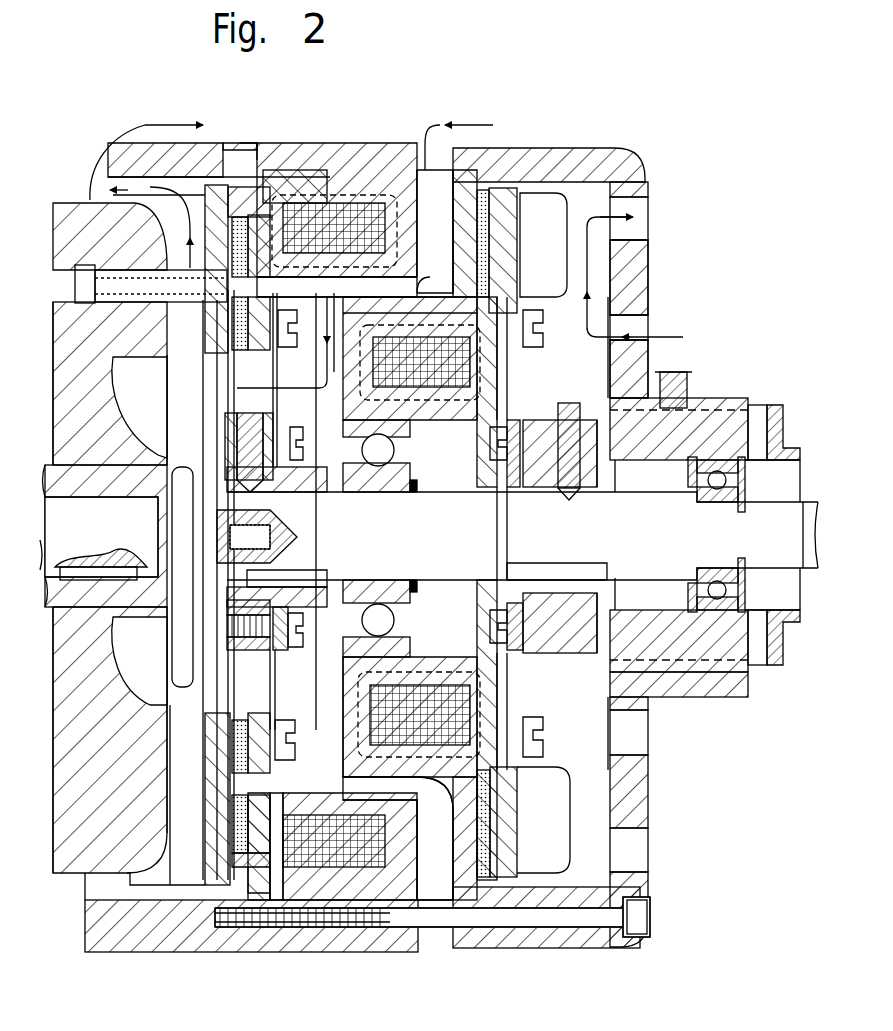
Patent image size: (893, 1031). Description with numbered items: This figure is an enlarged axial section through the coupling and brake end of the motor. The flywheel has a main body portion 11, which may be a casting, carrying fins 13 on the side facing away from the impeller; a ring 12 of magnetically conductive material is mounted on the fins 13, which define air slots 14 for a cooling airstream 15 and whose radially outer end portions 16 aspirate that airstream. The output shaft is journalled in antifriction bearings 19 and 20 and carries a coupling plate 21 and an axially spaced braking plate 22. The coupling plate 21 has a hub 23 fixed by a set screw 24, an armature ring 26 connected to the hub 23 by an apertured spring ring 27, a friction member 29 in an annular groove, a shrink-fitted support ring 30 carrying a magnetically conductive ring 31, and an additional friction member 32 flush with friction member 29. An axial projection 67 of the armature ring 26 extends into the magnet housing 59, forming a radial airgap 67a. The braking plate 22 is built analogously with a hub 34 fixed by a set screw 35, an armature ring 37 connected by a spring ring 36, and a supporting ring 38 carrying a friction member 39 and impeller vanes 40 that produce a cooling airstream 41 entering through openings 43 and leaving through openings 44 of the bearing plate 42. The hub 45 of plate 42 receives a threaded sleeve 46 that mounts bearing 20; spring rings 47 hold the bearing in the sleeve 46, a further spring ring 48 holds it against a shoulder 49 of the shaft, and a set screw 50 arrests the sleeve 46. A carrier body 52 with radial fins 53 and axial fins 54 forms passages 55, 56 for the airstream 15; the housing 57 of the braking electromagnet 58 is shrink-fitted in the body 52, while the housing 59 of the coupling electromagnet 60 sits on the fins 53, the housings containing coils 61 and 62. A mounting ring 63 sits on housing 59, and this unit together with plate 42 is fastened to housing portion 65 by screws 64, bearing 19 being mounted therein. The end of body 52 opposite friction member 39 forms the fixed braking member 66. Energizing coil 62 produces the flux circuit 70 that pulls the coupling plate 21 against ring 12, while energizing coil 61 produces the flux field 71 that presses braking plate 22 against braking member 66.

The main body portion 11 is at (77, 220).
The ring 12 is at (200, 822).
The fins 13 is at (165, 885).
The air slots 14 is at (180, 752).
The cooling airstream 15 is at (484, 125).
The radially outer end portions 16 is at (183, 885).
The antifriction bearing 19 is at (375, 480).
The antifriction bearing 20 is at (716, 495).
The coupling plate 21 is at (312, 610).
The braking plate 22 is at (525, 797).
The hub 23 is at (310, 478).
The set screw 24 is at (245, 448).
The armature ring 26 is at (240, 782).
The spring ring 27 is at (272, 676).
The friction member 29 is at (232, 730).
The support ring 30 is at (255, 806).
The ring 31 is at (260, 875).
The additional friction member 32 is at (235, 845).
The hub 34 is at (560, 650).
The set screw 35 is at (568, 415).
The spring ring 36 is at (520, 692).
The armature ring 37 is at (545, 748).
The supporting ring 38 is at (510, 826).
The friction member 39 is at (478, 862).
The impeller vanes 40 is at (555, 292).
The cooling airstream 41 is at (652, 215).
The bearing plate 42 is at (568, 948).
The openings 43 is at (642, 320).
The openings 44 is at (642, 230).
The hub 45 is at (678, 697).
The threaded sleeve 46 is at (762, 660).
The spring rings 47 is at (686, 472).
The spring ring 48 is at (745, 568).
The shoulder 49 is at (690, 578).
The set screw 50 is at (676, 380).
The carrier body 52 is at (460, 832).
The radial fins 53 is at (428, 890).
The axial fins 54 is at (410, 782).
The passage 55 is at (427, 180).
The passage 56 is at (340, 275).
The housing 57 is at (345, 672).
The electromagnet 58 is at (450, 652).
The housing 59 is at (345, 930).
The electromagnet 60 is at (357, 160).
The coil 61 is at (385, 703).
The coil 62 is at (318, 170).
The mounting ring 63 is at (268, 160).
The screws 64 is at (651, 910).
The housing portion 65 is at (205, 950).
The braking member 66 is at (477, 162).
The axial projection 67 is at (297, 325).
The radial airgap 67a is at (322, 418).
The magnetic flux circuit 70 is at (240, 332).
The magnetic flux field 71 is at (430, 398).